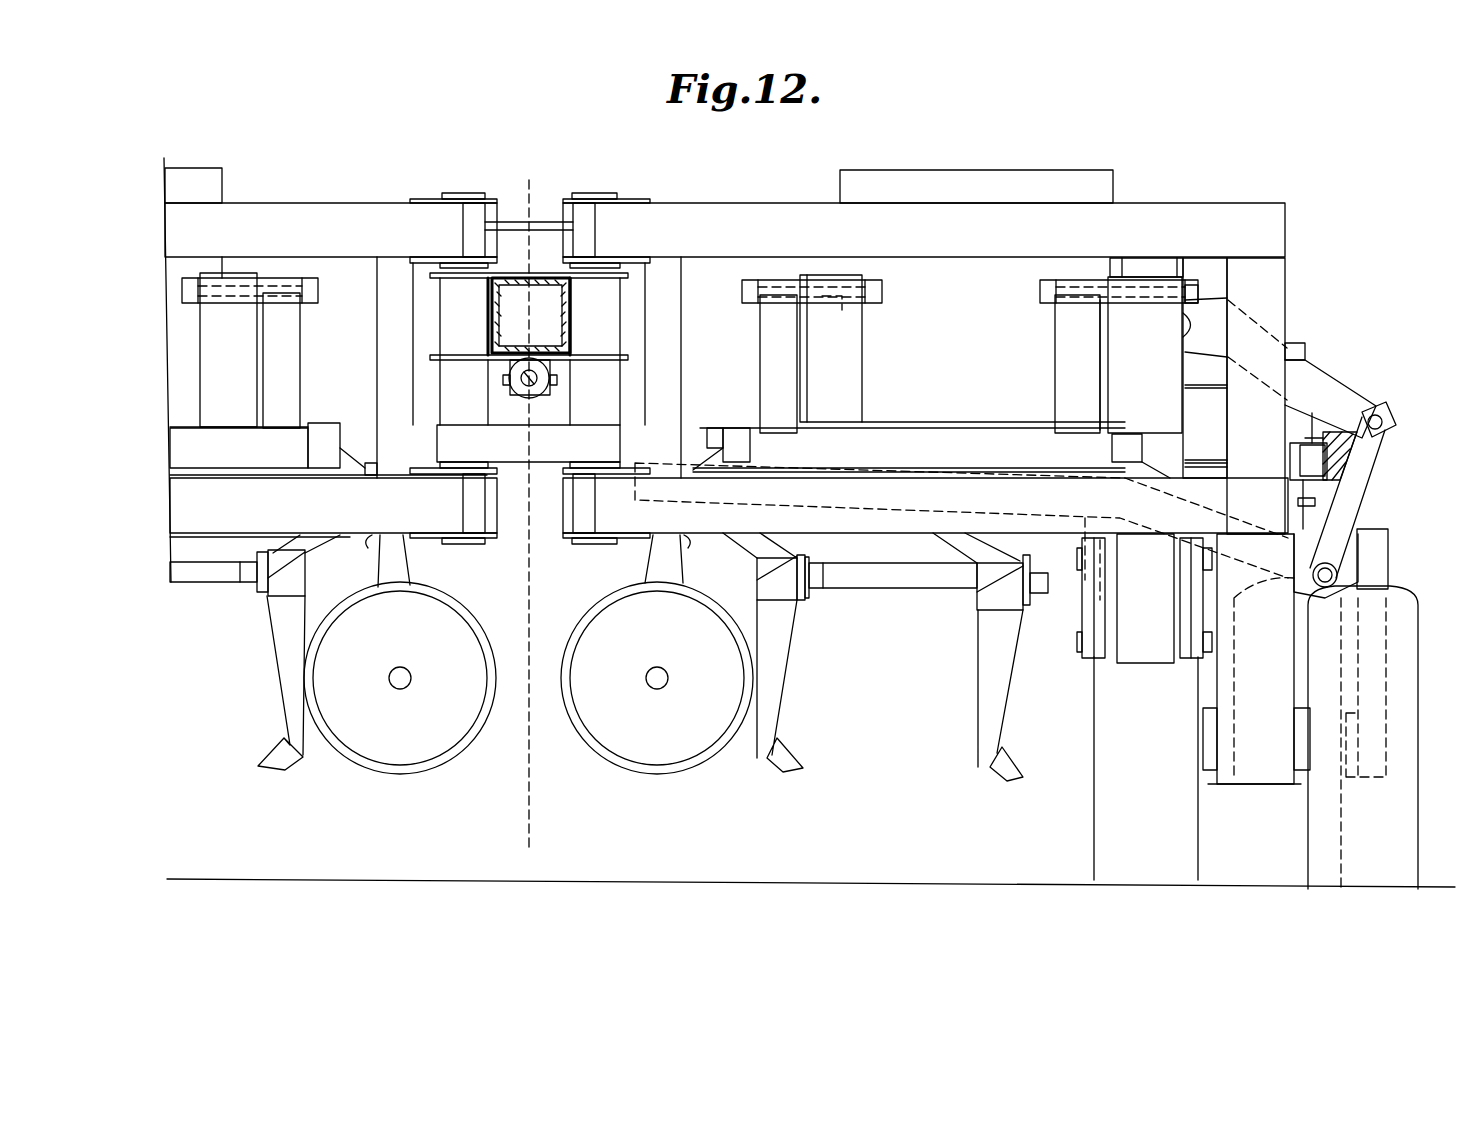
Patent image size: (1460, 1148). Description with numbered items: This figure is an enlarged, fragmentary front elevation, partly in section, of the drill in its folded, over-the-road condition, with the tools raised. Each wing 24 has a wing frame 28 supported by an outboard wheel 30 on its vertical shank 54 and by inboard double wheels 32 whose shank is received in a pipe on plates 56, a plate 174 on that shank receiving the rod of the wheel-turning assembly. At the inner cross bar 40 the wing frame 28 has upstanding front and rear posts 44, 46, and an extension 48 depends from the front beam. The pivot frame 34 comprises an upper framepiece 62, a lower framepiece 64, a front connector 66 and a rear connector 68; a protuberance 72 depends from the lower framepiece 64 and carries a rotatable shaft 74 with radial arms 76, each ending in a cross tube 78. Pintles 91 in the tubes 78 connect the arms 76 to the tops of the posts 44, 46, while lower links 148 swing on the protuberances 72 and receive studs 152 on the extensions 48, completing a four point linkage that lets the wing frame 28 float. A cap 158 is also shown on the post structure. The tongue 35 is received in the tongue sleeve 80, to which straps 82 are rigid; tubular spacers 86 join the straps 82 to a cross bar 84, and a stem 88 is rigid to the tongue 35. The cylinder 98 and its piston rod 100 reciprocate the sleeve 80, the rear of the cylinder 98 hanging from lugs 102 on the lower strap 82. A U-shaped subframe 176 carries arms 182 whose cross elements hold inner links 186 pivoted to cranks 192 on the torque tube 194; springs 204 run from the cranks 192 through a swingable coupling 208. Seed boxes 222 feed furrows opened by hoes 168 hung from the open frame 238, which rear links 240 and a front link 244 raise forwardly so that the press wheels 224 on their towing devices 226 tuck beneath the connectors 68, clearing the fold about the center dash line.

The wing 24 is at (140, 183).
The wing frame 28 is at (1197, 272).
The outboard wheel 30 is at (1340, 832).
The inboard double wheels 32 is at (1092, 790).
The pivot frame 34 is at (338, 200).
The tongue 35 is at (492, 310).
The inner cross bar 40 is at (898, 426).
The front post 44 is at (1128, 384).
The rear post 46 is at (200, 336).
The extension 48 is at (1113, 544).
The vertical shank 54 is at (1295, 343).
The plates 56 is at (1212, 392).
The upper framepiece 62 is at (259, 201).
The lower framepiece 64 is at (175, 504).
The front connector 66 is at (1282, 268).
The rear connector 68 is at (377, 316).
The protuberance 72 is at (1140, 662).
The rotatable shaft 74 is at (180, 446).
The arm 76 is at (298, 374).
The cross tube 78 is at (302, 280).
The tongue sleeve 80 is at (563, 312).
The strap 82 is at (472, 290).
The cross bar 84 is at (516, 466).
The tubular spacer 86 is at (440, 345).
The stem 88 is at (533, 222).
The pintle 91 is at (212, 310).
The cylinder 98 is at (538, 396).
The piston rod 100 is at (520, 392).
The lug 102 is at (506, 371).
The lower link 148 is at (1082, 603).
The stud 152 is at (1078, 560).
The cap 158 is at (1133, 258).
The hoe 168 is at (268, 674).
The plate 174 is at (1288, 465).
The subframe 176 is at (1185, 497).
The arm 182 is at (1345, 566).
The inner link 186 is at (1366, 482).
The crank 192 is at (1318, 376).
The torque tube 194 is at (1210, 316).
The spring 204 is at (1312, 440).
The swingable coupling 208 is at (1376, 406).
The seed box 222 is at (188, 172).
The press wheel 224 is at (423, 783).
The towing device 226 is at (650, 568).
The open frame 238 is at (195, 586).
The rear link 240 is at (740, 540).
The front link 244 is at (952, 542).